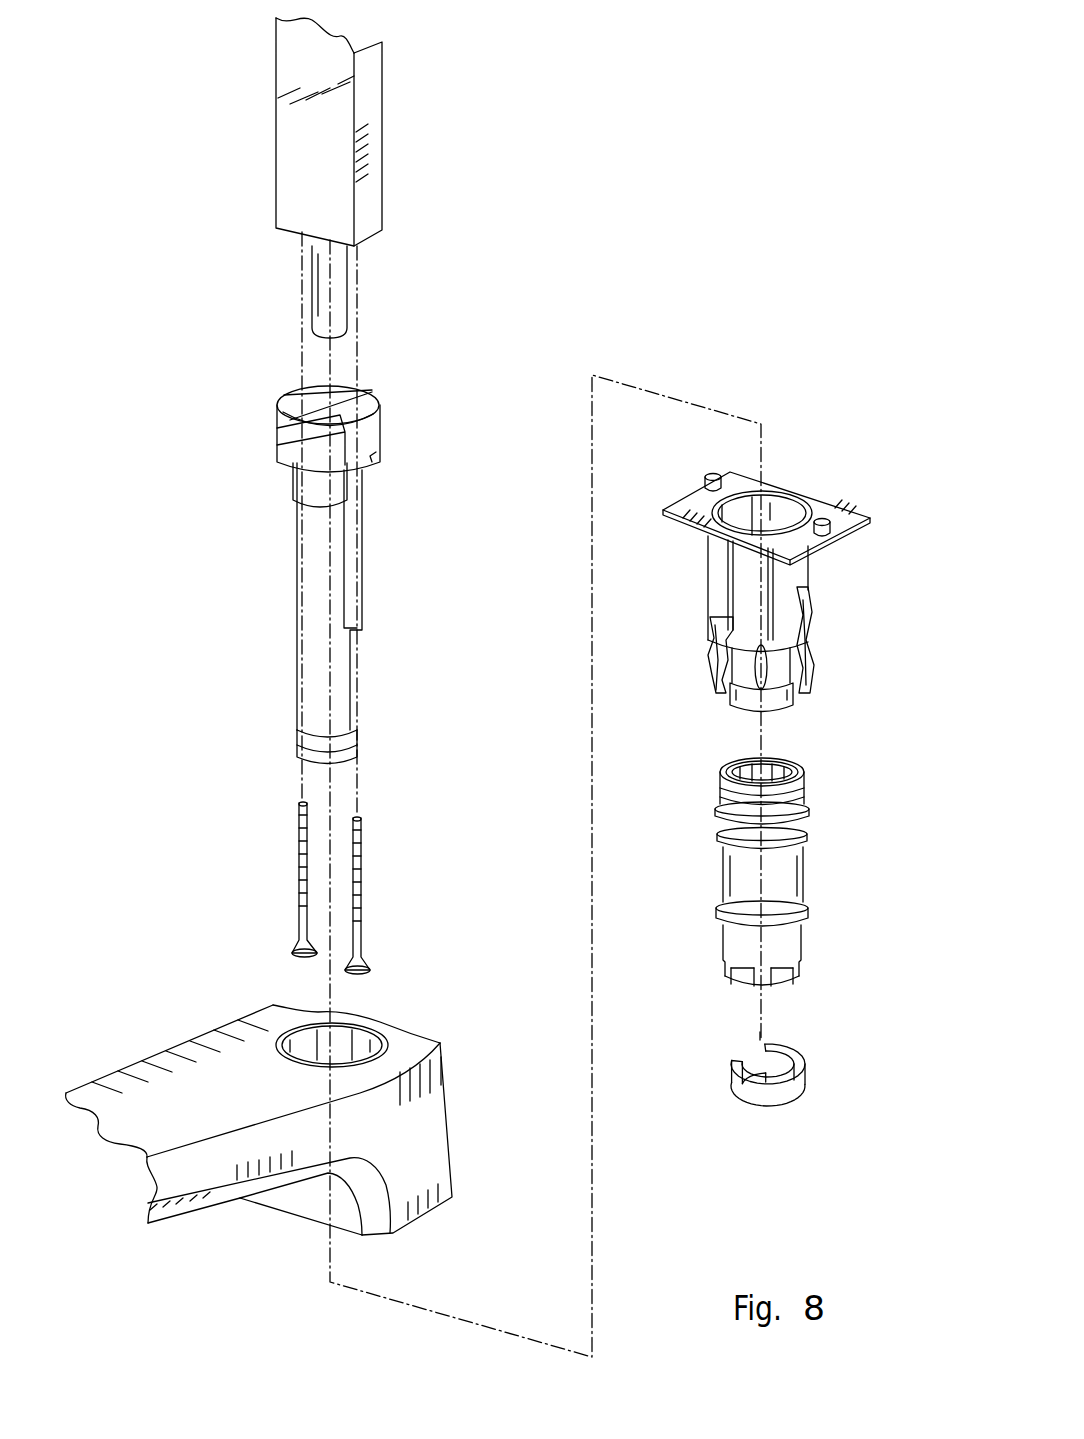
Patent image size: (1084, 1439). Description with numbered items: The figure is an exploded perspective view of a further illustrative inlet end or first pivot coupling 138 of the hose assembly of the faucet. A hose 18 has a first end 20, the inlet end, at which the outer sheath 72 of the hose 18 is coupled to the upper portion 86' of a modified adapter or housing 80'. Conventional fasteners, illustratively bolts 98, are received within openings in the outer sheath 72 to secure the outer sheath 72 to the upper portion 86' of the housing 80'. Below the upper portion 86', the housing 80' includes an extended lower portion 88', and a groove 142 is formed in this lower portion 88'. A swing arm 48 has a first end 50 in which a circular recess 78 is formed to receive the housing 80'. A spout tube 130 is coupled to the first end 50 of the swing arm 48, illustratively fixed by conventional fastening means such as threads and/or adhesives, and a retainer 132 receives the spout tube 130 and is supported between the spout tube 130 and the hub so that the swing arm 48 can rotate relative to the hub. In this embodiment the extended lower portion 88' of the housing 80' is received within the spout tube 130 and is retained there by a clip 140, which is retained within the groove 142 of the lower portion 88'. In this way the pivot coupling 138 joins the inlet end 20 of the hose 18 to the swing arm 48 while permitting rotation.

The hose 18 is at (216, 132).
The first end 20 is at (402, 213).
The outer sheath 72 is at (370, 84).
The first pivot coupling 138 is at (208, 318).
The upper portion 86' is at (219, 421).
The housing 80' is at (386, 429).
The lower portion 88' is at (271, 613).
The groove 142 is at (298, 730).
The bolts 98 is at (354, 860).
The swing arm 48 is at (150, 1053).
The circular recess 78 is at (370, 1032).
The first end 50 is at (455, 1082).
The retainer 132 is at (817, 597).
The spout tube 130 is at (803, 870).
The clip 140 is at (805, 1060).